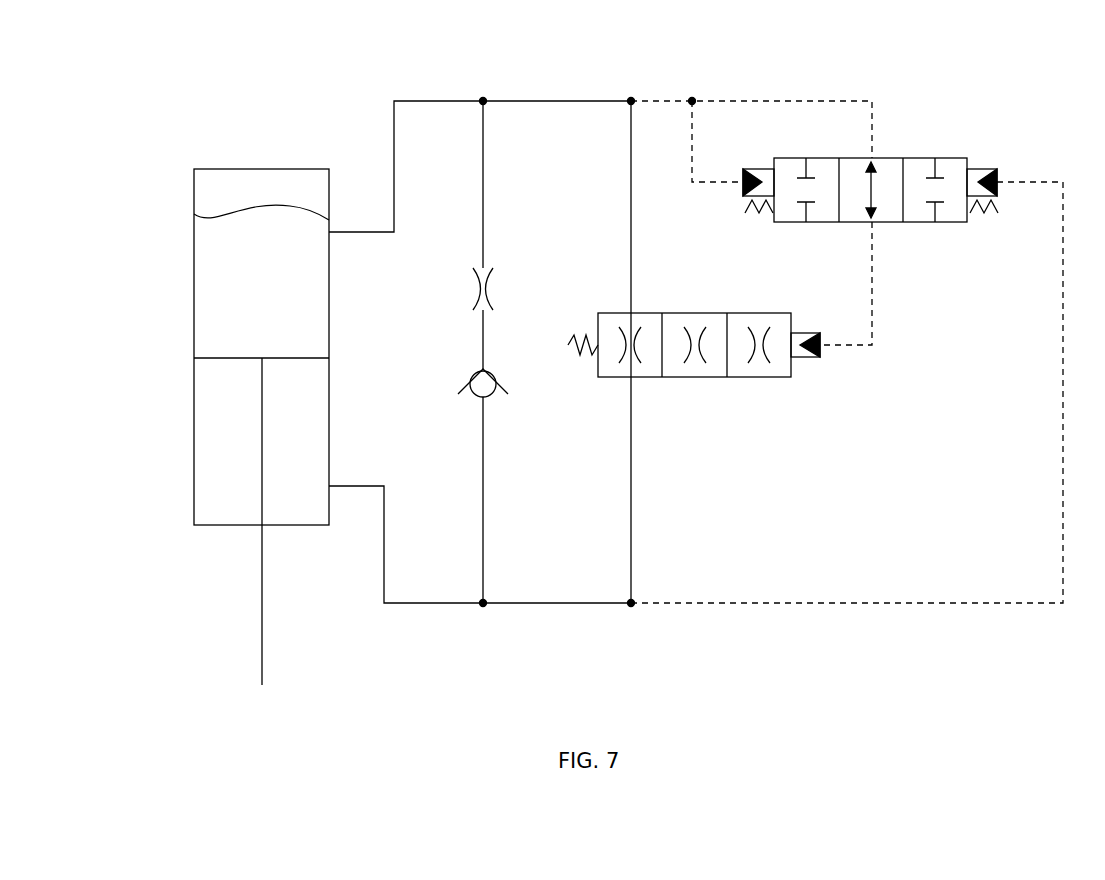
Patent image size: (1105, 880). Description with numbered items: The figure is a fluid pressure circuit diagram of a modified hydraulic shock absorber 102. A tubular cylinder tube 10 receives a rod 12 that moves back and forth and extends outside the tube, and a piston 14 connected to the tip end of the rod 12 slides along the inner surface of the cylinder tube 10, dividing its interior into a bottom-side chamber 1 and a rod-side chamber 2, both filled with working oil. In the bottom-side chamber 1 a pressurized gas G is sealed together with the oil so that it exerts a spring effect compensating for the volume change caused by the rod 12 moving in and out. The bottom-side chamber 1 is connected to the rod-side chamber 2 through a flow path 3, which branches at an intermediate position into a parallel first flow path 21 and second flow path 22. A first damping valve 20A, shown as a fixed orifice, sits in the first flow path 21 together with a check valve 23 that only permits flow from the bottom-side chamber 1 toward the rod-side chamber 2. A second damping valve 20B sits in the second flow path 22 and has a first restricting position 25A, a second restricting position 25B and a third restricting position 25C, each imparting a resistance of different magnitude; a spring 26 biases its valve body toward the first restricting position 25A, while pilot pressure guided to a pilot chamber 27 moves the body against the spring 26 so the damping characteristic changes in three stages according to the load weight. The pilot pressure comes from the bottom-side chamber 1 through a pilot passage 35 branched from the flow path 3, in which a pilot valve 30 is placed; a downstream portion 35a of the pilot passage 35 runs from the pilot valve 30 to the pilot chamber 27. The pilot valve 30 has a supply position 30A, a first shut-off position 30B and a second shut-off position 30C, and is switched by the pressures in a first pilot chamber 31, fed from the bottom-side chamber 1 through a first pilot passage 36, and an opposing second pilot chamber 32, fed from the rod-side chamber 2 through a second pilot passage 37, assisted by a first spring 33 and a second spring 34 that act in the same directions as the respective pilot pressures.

The hydraulic shock absorber 102 is at (212, 123).
The pressurized gas G is at (279, 186).
The bottom-side chamber 1 is at (230, 231).
The cylinder tube 10 is at (194, 277).
The piston 14 is at (228, 361).
The rod-side chamber 2 is at (233, 446).
The rod 12 is at (262, 628).
The flow path 3 is at (415, 99).
The first flow path 21 is at (483, 170).
The second flow path 22 is at (631, 170).
The first damping valve 20A is at (470, 296).
The second damping valve 20B is at (668, 298).
The check valve 23 is at (466, 386).
The first restricting position 25A is at (650, 313).
The second restricting position 25B is at (715, 313).
The third restricting position 25C is at (780, 313).
The spring 26 is at (570, 338).
The pilot chamber 27 is at (812, 333).
The pilot valve 30 is at (865, 209).
The supply position 30A is at (893, 158).
The first shut-off position 30B is at (786, 158).
The second shut-off position 30C is at (950, 158).
The first pilot chamber 31 is at (760, 178).
The second pilot chamber 32 is at (978, 178).
The first spring 33 is at (758, 216).
The second spring 34 is at (982, 216).
The pilot passage 35 is at (847, 317).
The downstream portion 35a is at (850, 348).
The first pilot passage 36 is at (703, 186).
The second pilot passage 37 is at (1063, 358).